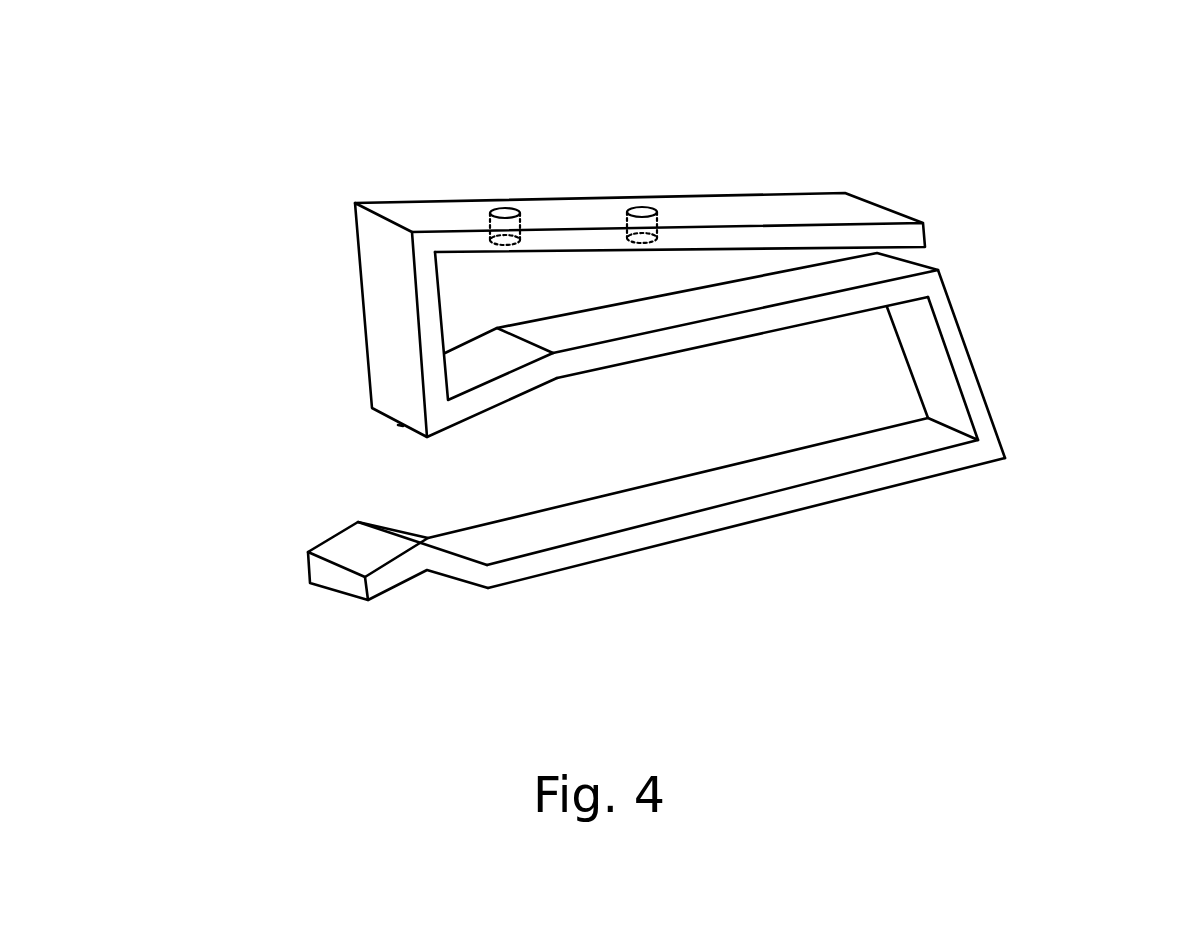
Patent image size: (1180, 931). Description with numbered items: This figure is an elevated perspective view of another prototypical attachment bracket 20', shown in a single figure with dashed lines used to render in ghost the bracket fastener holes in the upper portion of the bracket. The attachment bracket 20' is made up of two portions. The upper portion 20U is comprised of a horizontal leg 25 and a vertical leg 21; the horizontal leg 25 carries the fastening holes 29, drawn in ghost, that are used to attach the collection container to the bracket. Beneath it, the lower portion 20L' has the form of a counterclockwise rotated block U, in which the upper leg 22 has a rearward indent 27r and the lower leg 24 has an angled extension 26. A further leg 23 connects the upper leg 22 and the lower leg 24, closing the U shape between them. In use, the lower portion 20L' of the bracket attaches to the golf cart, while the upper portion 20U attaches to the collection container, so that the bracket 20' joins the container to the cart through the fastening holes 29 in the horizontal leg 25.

The attachment bracket 20' is at (673, 325).
The upper portion 20U is at (324, 270).
The lower portion 20L' is at (673, 427).
The vertical leg 21 is at (310, 331).
The upper leg 22 is at (740, 349).
The leg 23 is at (996, 381).
The lower leg 24 is at (925, 501).
The horizontal leg 25 is at (702, 172).
The angled extension 26 is at (263, 579).
The rearward indent 27r is at (572, 393).
The fastening holes 29 is at (640, 197).